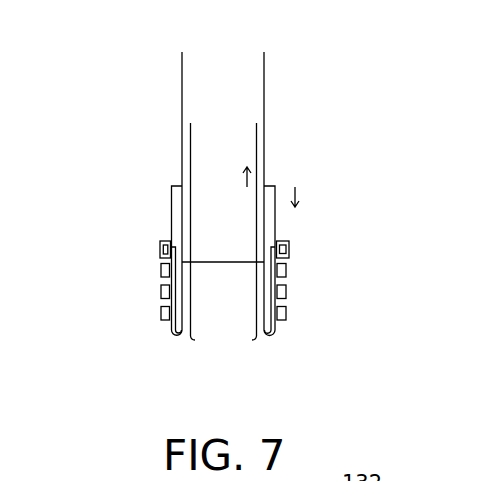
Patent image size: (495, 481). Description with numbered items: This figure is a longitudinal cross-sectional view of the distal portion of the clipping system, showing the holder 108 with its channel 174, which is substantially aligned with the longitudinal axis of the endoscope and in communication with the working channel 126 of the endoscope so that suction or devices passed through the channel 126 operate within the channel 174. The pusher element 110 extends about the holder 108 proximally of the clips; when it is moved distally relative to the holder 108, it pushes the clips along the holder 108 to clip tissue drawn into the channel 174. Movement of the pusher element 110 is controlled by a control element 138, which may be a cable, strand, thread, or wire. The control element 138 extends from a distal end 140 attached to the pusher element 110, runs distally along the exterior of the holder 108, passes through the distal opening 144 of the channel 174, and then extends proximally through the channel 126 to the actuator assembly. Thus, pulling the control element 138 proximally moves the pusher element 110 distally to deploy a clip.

The holder 108 is at (134, 205).
The pusher element 110 is at (285, 242).
The working channel 126 is at (218, 93).
The control element 138 is at (257, 142).
The distal end 140 is at (272, 260).
The distal opening 144 is at (243, 325).
The channel 174 is at (205, 300).